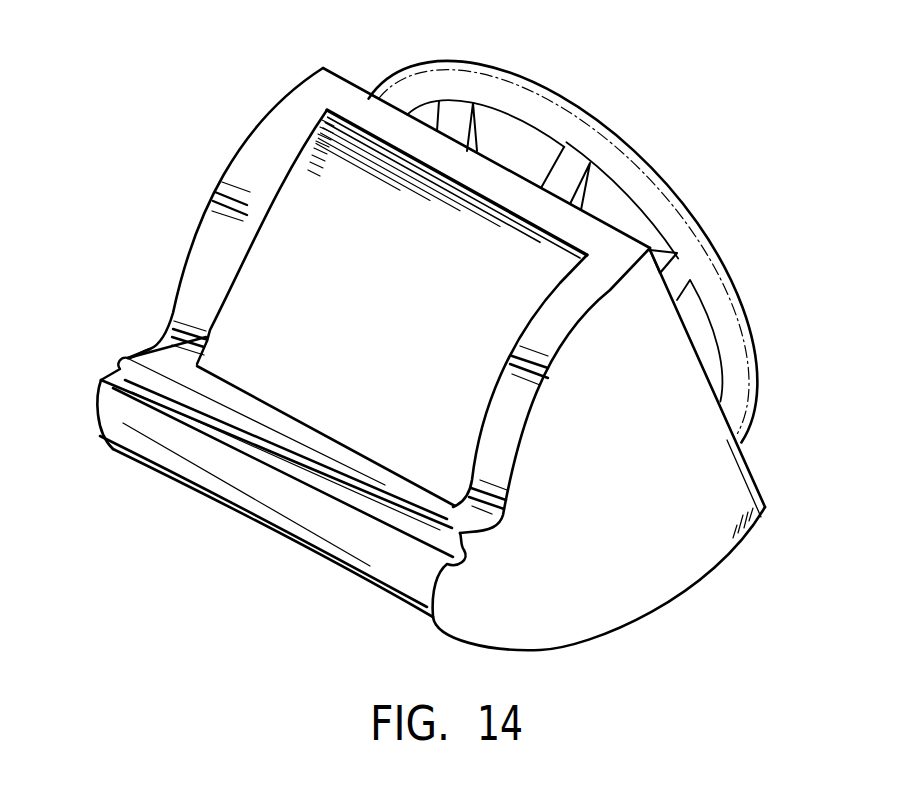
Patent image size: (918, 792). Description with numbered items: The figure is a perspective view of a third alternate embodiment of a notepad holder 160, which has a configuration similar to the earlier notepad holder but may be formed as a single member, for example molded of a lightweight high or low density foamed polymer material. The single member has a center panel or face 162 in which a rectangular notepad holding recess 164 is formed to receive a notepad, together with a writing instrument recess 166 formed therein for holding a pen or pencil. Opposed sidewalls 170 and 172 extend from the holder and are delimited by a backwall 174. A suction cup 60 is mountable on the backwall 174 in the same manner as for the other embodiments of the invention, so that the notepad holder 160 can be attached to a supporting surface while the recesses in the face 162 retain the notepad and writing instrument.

The suction cup 60 is at (718, 299).
The notepad holder 160 is at (395, 347).
The center panel or face 162 is at (277, 127).
The rectangular notepad holding recess 164 is at (416, 327).
The writing instrument recess 166 is at (118, 367).
The sidewall 170 is at (458, 598).
The sidewall 172 is at (192, 247).
The backwall 174 is at (608, 230).